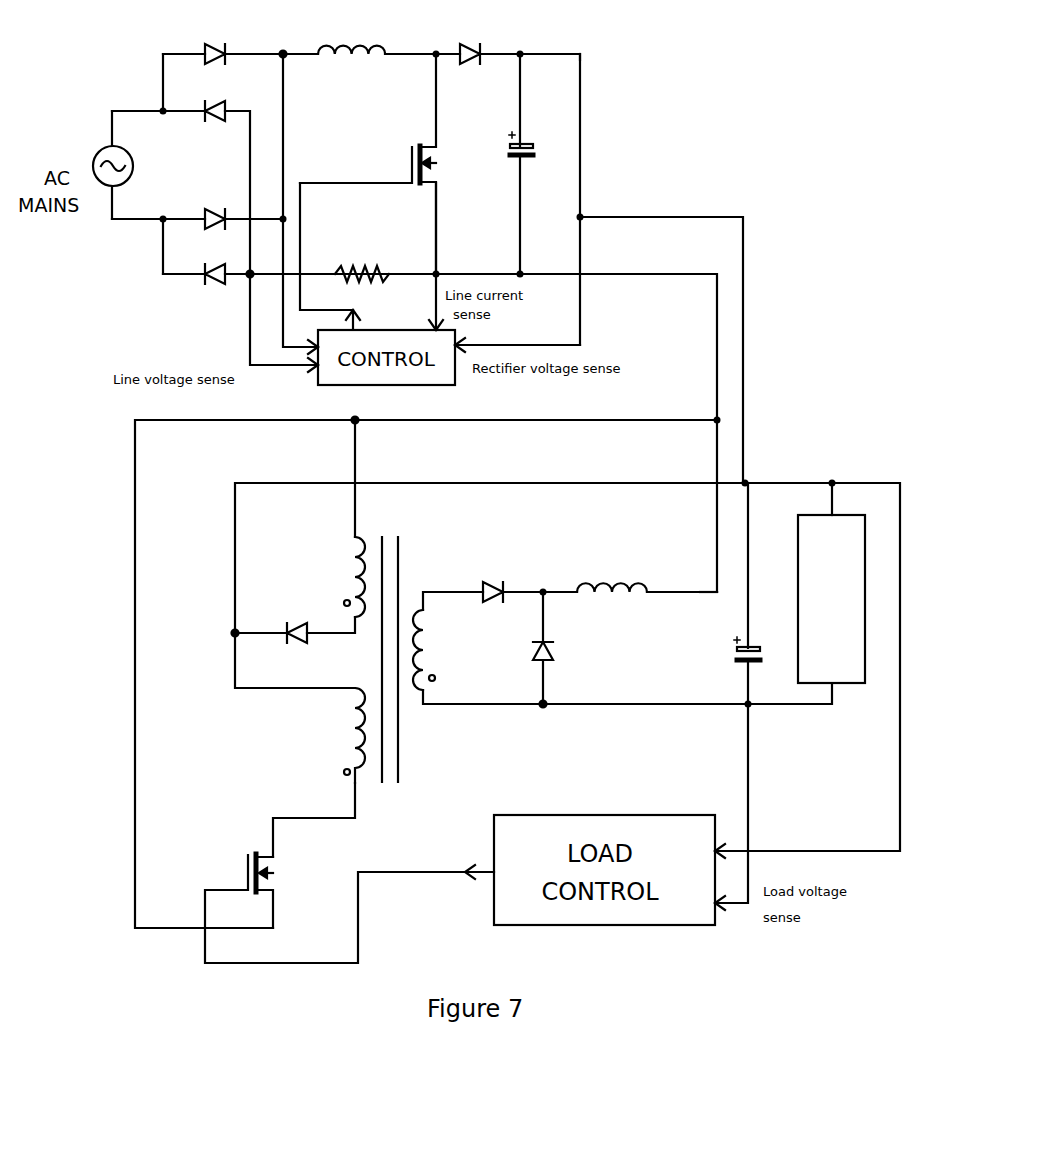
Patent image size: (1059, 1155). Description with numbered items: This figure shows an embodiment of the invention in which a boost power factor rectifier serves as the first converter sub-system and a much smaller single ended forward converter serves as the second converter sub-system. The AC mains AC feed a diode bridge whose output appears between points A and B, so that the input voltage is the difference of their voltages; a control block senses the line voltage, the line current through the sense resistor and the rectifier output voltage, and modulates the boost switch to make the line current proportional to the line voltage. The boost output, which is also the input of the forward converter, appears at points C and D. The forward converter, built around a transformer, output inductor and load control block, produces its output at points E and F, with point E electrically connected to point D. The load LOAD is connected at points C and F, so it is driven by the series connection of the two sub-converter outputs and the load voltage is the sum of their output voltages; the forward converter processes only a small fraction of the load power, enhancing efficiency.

The load LOAD is at (831, 583).
The AC mains AC is at (113, 165).
The point A is at (279, 43).
The point B is at (238, 293).
The point C is at (216, 637).
The point D is at (342, 434).
The point E is at (705, 578).
The point F is at (550, 718).